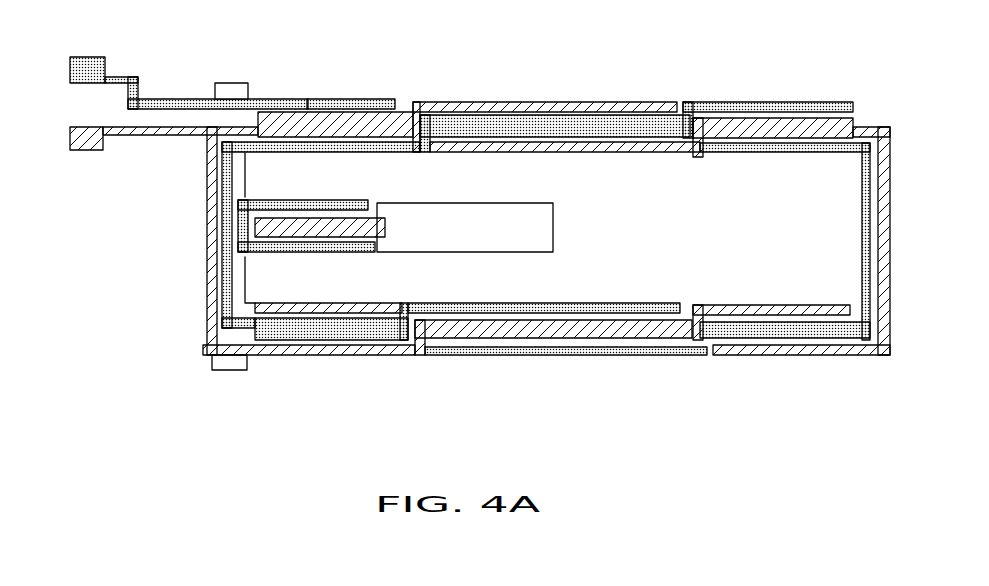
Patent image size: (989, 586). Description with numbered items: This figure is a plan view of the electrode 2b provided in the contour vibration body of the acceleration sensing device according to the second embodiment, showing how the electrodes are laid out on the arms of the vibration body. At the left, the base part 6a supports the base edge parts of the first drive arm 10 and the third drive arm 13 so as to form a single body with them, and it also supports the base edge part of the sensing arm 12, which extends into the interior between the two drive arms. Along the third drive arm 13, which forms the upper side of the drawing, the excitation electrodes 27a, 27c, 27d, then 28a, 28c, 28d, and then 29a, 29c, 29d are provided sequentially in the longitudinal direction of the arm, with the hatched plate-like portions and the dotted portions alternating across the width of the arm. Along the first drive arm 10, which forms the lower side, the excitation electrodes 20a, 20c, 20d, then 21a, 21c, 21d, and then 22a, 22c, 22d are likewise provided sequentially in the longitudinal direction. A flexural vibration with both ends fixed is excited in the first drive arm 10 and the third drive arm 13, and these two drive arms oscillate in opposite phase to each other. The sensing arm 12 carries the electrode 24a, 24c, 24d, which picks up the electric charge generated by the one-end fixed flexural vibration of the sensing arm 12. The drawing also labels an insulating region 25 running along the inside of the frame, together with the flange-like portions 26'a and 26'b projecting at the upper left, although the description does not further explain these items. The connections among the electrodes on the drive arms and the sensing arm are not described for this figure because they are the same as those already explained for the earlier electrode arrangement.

The electrode 2b is at (546, 98).
The base part 6a is at (176, 261).
The first drive arm 10 is at (708, 289).
The sensing arm 12 is at (553, 232).
The third drive arm 13 is at (776, 124).
The excitation electrode 20a is at (347, 332).
The excitation electrode 20c is at (305, 303).
The excitation electrode 20d is at (306, 350).
The excitation electrode 21a is at (515, 340).
The excitation electrode 21c is at (555, 303).
The excitation electrode 21d is at (645, 352).
The excitation electrode 22a is at (745, 340).
The excitation electrode 22c is at (780, 303).
The excitation electrode 22d is at (822, 350).
The electrode 24a is at (395, 204).
The electrode 24c is at (342, 200).
The electrode 24d is at (342, 248).
The insulating sheet 25 is at (170, 100).
The housing flange plate 26'a is at (64, 160).
The insulating flange 26'b is at (111, 52).
The excitation electrode 27a is at (313, 127).
The excitation electrode 27c is at (333, 102).
The excitation electrode 27d is at (277, 146).
The excitation electrode 28a is at (490, 108).
The excitation electrode 28c is at (553, 97).
The excitation electrode 28d is at (602, 155).
The excitation electrode 29a is at (713, 142).
The excitation electrode 29c is at (797, 108).
The excitation electrode 29d is at (775, 151).